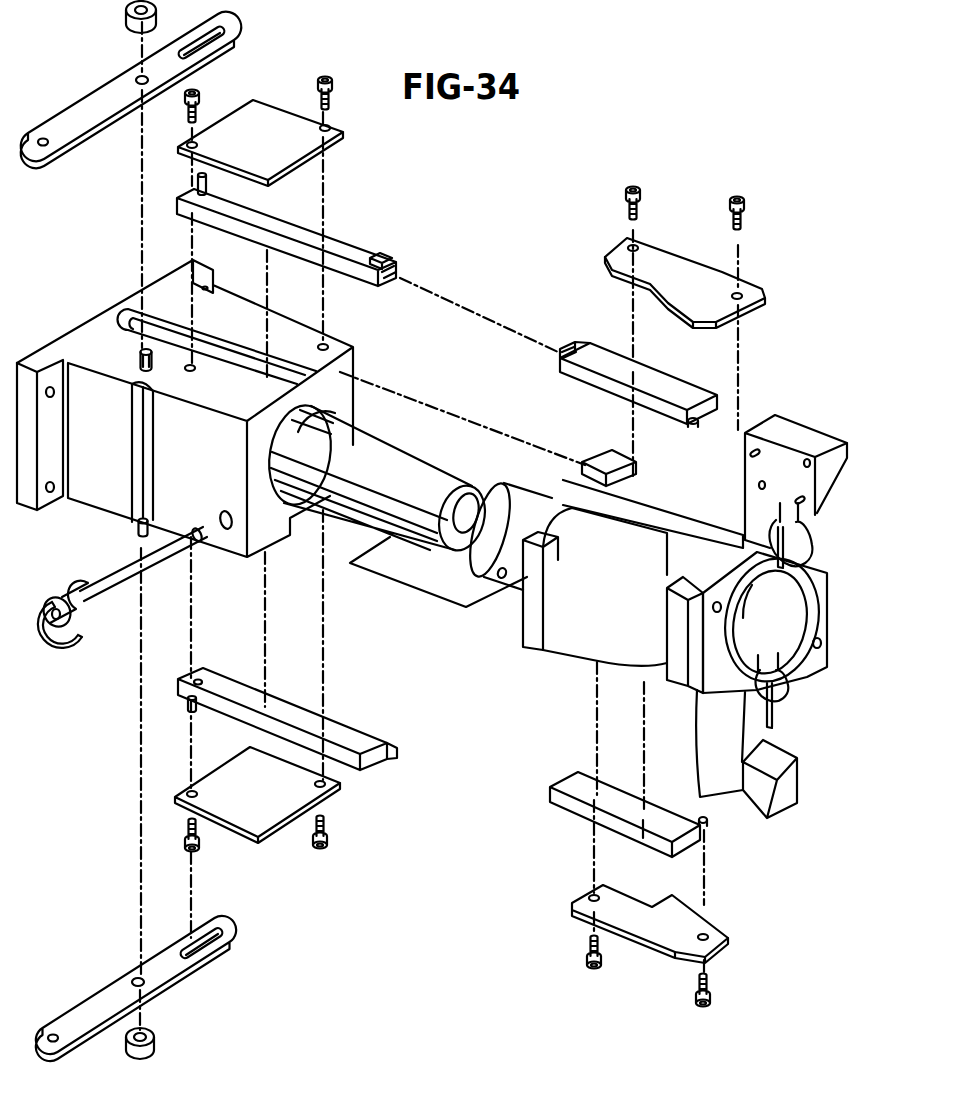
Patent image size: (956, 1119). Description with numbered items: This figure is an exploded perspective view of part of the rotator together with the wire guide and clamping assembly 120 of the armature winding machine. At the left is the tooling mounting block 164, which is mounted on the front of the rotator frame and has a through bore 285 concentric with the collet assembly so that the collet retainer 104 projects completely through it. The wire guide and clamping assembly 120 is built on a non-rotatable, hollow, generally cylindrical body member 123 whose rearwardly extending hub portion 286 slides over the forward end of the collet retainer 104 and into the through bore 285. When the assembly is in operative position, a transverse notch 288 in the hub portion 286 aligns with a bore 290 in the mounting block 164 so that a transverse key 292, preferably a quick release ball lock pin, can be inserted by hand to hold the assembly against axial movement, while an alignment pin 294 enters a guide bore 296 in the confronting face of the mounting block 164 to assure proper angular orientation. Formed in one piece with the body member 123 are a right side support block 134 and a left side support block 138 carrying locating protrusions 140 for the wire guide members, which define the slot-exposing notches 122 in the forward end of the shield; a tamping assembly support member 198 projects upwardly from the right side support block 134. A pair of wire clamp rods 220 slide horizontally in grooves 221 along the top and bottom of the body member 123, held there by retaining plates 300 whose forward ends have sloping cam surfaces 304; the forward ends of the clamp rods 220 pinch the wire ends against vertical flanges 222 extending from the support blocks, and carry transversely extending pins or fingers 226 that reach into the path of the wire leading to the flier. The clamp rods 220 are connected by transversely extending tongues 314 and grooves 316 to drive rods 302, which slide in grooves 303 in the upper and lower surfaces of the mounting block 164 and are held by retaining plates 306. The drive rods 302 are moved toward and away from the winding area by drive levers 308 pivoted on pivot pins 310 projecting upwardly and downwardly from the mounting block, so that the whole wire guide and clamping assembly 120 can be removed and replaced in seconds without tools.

The collet retainer 104 is at (417, 467).
The wire guide and clamping assembly 120 is at (584, 670).
The slot-exposing notches 122 is at (788, 520).
The body member 123 is at (572, 648).
The right side support block 134 is at (827, 627).
The left side support block 138 is at (688, 678).
The locating protrusions 140 is at (790, 560).
The tooling mounting block 164 is at (80, 497).
The right side tamping assembly support member 198 is at (737, 810).
The wire clamp rods 220 is at (637, 372).
The grooves 221 is at (662, 515).
The vertical flanges 222 is at (672, 580).
The pins or fingers 226 is at (697, 424).
The through bore 285 is at (330, 408).
The hub portion 286 is at (521, 490).
The transverse notch 288 is at (501, 582).
The bore 290 is at (224, 511).
The transverse key 292 is at (85, 612).
The alignment pin 294 is at (586, 458).
The guide bore 296 is at (355, 357).
The retaining plates 300 is at (688, 263).
The drive rods 302 is at (332, 235).
The grooves 303 is at (218, 336).
The cam surfaces 304 is at (735, 322).
The retaining plates 306 is at (268, 113).
The drive levers 308 is at (86, 106).
The pivot pins 310 is at (142, 350).
The tongues 314 is at (386, 276).
The grooves 316 is at (368, 262).